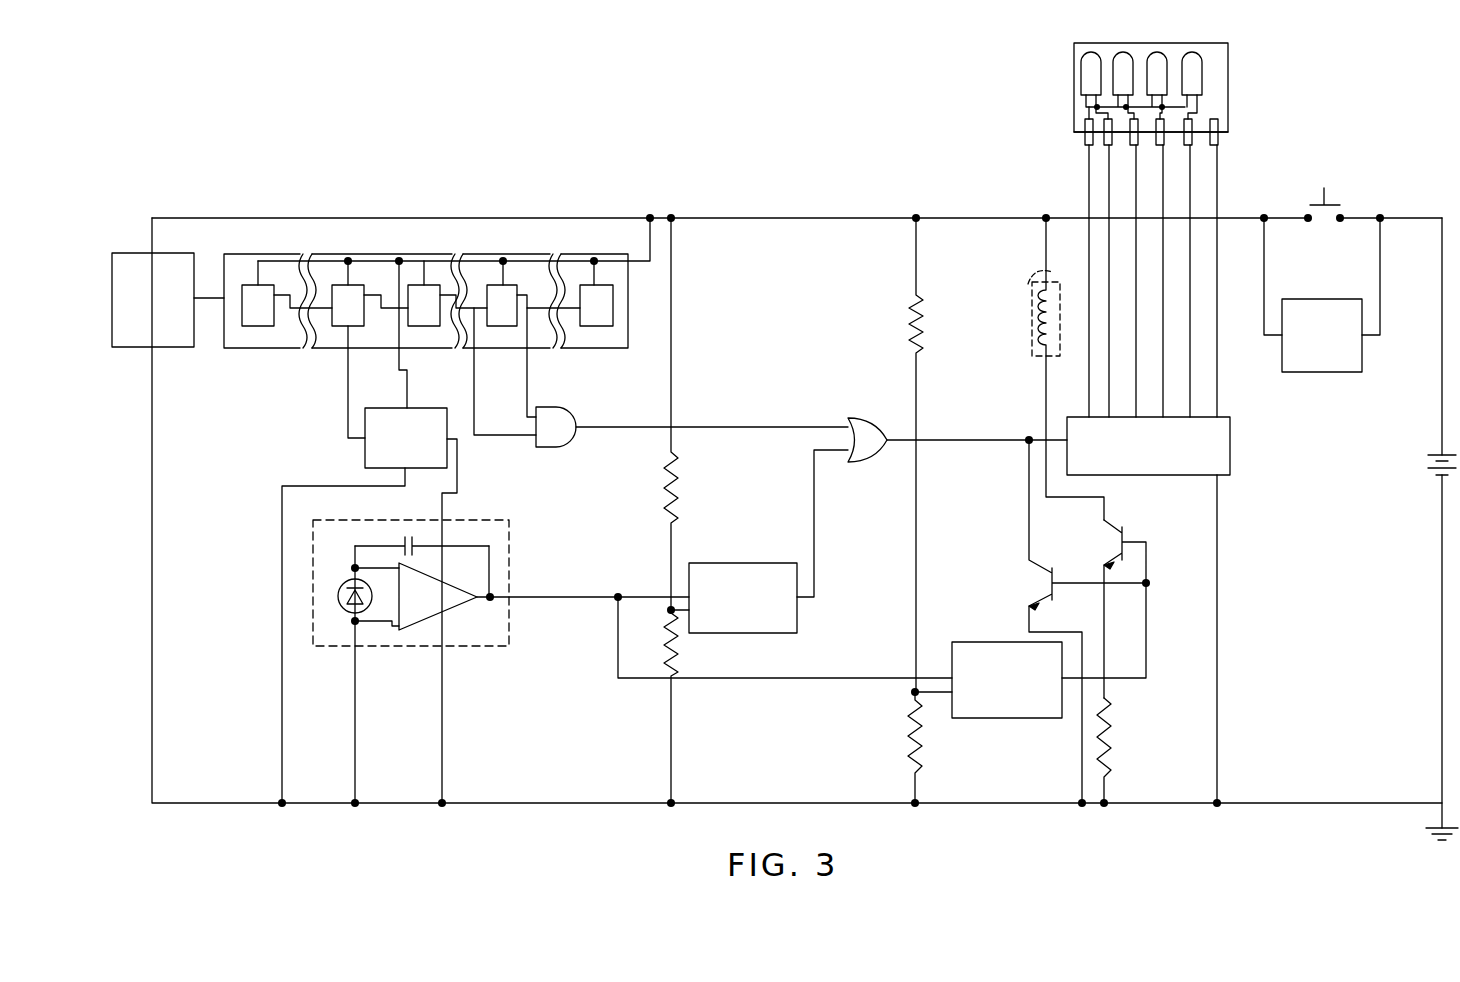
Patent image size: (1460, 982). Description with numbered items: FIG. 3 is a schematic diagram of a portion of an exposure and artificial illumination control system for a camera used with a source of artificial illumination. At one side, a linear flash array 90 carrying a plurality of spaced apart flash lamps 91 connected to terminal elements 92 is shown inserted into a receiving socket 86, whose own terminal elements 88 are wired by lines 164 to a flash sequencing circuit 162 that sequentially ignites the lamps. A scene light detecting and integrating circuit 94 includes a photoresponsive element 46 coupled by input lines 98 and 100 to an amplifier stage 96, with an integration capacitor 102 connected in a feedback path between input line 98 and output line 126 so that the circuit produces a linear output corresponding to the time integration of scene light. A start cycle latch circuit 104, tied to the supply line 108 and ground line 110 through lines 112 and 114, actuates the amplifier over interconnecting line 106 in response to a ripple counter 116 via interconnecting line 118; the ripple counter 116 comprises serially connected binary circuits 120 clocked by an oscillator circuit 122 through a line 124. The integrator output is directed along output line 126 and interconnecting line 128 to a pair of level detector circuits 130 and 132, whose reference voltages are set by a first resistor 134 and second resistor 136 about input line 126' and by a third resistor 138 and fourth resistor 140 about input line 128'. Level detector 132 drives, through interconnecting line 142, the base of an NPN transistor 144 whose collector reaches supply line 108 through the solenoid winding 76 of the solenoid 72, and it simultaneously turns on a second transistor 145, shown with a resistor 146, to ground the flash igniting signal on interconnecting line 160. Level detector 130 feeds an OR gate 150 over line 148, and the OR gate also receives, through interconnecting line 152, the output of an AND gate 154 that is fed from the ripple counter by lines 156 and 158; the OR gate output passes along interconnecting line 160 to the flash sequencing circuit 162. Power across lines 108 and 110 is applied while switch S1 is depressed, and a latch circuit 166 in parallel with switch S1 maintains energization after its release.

The photoresponsive element 46 is at (345, 610).
The solenoid 72 is at (1029, 314).
The solenoid winding 76 is at (1050, 325).
The receiving socket 86 is at (1220, 138).
The terminal elements 88 is at (1085, 137).
The linear flash array 90 is at (1232, 82).
The flash lamps 91 is at (1200, 58).
The terminal elements 92 is at (1220, 126).
The scene light detecting and integrating circuit 94 is at (509, 557).
The amplifier stage 96 is at (460, 606).
The input line 98 is at (358, 567).
The input line 100 is at (383, 622).
The integration capacitor 102 is at (404, 537).
The start cycle latch circuit 104 is at (365, 454).
The interconnecting line 106 is at (443, 503).
The supply line 108 is at (790, 216).
The ground line 110 is at (593, 804).
The line 112 is at (407, 383).
The line 114 is at (282, 700).
The ripple counter 116 is at (492, 250).
The interconnecting line 118 is at (349, 370).
The binary circuits 120 is at (296, 276).
The oscillator circuit 122 is at (187, 348).
The line 124 is at (210, 299).
The output line 126 is at (583, 612).
The input line 126' is at (701, 635).
The interconnecting line 128 is at (785, 655).
The input line 128' is at (944, 718).
The level detector circuit 130 is at (797, 622).
The level detector circuit 132 is at (1020, 720).
The first resistor 134 is at (665, 487).
The second resistor 136 is at (664, 638).
The third resistor 138 is at (923, 321).
The fourth resistor 140 is at (922, 747).
The interconnecting line 142 is at (1147, 608).
The NPN transistor 144 is at (1120, 543).
The second transistor 145 is at (1050, 584).
The resistor 146 is at (1110, 745).
The line 148 is at (815, 517).
The OR gate 150 is at (872, 410).
The interconnecting line 152 is at (791, 426).
The AND gate 154 is at (570, 410).
The line 156 is at (528, 373).
The line 158 is at (511, 436).
The interconnecting line 160 is at (981, 438).
The flash sequencing circuit 162 is at (1183, 476).
The lines 164 is at (1190, 381).
The latch circuit 166 is at (1345, 373).
The switch S1 is at (1328, 203).